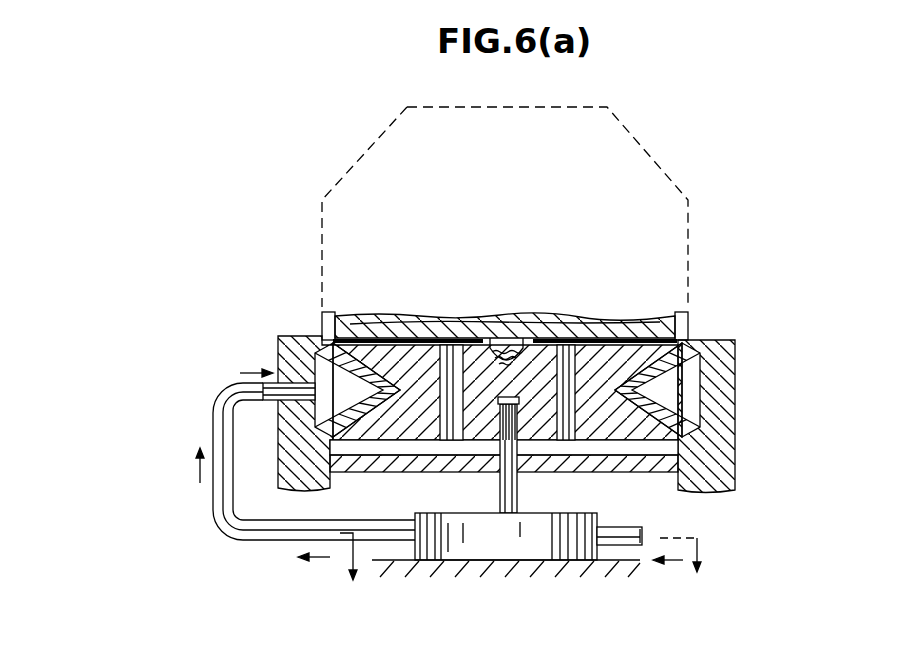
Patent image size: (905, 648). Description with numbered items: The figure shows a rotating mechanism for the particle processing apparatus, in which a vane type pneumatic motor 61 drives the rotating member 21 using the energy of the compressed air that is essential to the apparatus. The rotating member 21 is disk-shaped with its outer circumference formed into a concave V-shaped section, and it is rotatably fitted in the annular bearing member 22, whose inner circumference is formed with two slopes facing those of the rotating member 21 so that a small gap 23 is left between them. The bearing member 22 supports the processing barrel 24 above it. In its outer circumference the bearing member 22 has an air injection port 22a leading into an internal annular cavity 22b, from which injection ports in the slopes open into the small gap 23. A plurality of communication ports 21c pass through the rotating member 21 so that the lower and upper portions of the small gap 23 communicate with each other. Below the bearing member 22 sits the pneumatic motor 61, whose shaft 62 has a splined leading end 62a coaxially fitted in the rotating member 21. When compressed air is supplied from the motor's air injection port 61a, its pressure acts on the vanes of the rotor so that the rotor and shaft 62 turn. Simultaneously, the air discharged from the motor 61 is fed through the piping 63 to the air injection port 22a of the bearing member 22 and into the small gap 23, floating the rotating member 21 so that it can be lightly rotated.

The processing barrel 24 is at (354, 192).
The annular cavity 22b is at (314, 343).
The air injection port 22a is at (292, 393).
The bearing member 22 is at (725, 395).
The small gap 23 is at (346, 448).
The rotating member 21 is at (413, 425).
The communication ports 21c is at (453, 433).
The leading end 62a is at (512, 425).
The piping 63 is at (250, 541).
The vane type pneumatic motor 61 is at (406, 540).
The shaft 62 is at (514, 500).
The air injection port 61a is at (628, 546).